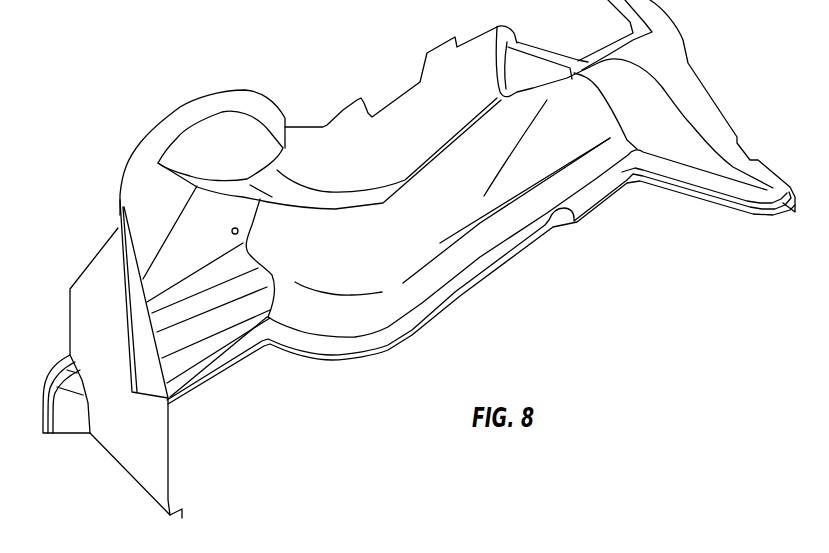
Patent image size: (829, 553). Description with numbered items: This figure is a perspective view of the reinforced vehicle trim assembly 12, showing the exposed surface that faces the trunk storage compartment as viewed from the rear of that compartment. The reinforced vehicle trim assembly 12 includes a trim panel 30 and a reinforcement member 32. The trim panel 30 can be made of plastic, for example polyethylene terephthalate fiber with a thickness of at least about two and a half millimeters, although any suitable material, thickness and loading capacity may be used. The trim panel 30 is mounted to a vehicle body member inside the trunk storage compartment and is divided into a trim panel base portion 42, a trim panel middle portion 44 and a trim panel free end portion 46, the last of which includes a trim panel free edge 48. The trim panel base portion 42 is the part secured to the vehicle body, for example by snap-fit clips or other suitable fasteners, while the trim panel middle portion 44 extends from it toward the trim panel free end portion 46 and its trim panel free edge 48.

The reinforced vehicle trim assembly 12 is at (348, 42).
The trim panel 30 is at (458, 255).
The reinforcement member 32 is at (75, 422).
The trim panel base portion 42 is at (333, 200).
The trim panel middle portion 44 is at (343, 314).
The trim panel free end portion 46 is at (412, 331).
The trim panel free edge 48 is at (370, 355).